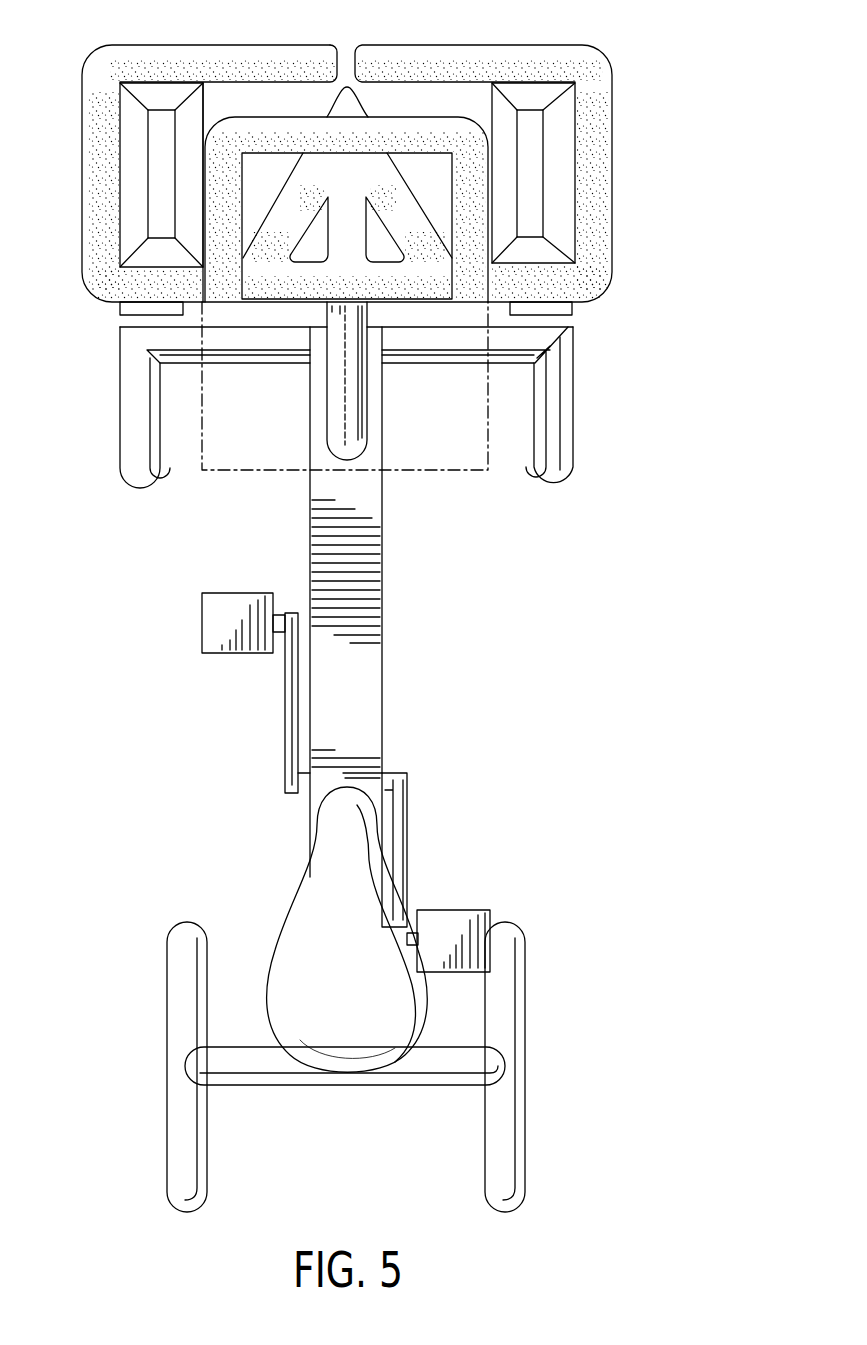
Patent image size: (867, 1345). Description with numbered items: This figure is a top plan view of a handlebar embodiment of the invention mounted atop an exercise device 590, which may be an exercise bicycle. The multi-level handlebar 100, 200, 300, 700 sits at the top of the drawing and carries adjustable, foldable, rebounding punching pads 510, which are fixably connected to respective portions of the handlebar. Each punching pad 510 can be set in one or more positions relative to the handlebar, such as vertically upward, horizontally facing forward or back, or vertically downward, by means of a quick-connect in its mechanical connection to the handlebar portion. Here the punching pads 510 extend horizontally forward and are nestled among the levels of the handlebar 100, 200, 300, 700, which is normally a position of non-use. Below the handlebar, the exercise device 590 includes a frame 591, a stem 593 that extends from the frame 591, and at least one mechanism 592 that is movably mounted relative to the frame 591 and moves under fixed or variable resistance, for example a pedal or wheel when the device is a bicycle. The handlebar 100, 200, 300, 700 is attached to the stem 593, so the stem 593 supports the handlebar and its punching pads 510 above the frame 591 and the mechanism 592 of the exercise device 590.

The multi-level handlebar 100 is at (371, 167).
The multi-level handlebar 200 is at (371, 167).
The multi-level handlebar 300 is at (371, 167).
The handlebar 700 is at (536, 41).
The punching pads 510 is at (150, 255).
The exercise device 590 is at (346, 757).
The frame 591 is at (373, 1090).
The mechanism 592 is at (282, 712).
The stem 593 is at (385, 393).